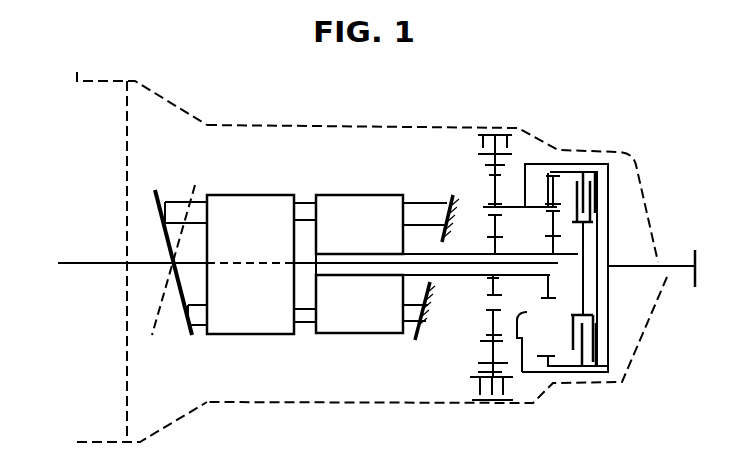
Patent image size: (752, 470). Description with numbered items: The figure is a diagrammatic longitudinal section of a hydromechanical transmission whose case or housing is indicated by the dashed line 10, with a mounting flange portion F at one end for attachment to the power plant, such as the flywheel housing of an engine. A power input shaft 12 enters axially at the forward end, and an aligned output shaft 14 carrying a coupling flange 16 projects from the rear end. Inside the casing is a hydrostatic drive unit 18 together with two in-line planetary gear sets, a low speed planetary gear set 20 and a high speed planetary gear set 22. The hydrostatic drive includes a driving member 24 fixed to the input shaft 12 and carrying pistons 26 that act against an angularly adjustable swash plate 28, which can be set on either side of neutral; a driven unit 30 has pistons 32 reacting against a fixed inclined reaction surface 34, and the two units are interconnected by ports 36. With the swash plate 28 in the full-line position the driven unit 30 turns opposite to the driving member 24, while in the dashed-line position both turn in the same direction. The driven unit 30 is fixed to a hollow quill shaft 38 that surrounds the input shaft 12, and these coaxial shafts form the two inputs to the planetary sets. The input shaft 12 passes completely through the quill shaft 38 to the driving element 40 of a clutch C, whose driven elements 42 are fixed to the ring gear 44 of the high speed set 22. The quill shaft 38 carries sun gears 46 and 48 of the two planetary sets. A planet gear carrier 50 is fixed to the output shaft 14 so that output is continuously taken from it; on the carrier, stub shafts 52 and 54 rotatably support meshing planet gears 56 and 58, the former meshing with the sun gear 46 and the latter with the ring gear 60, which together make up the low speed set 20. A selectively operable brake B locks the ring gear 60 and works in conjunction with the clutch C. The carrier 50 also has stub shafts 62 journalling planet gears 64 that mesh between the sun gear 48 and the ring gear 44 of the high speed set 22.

The dashed line 10 is at (365, 127).
The power input shaft 12 is at (68, 263).
The output shaft 14 is at (675, 267).
The coupling flange 16 is at (697, 278).
The hydrostatic drive unit 18 is at (381, 257).
The low speed planetary gear set 20 is at (480, 362).
The high speed planetary gear set 22 is at (580, 165).
The driving member 24 is at (223, 195).
The pistons 26 is at (172, 197).
The swash plate 28 is at (153, 200).
The driven unit 30 is at (350, 208).
The pistons 32 is at (422, 203).
The reaction surface 34 is at (430, 284).
The ports 36 is at (307, 202).
The quill shaft 38 is at (447, 276).
The driving element 40 is at (586, 234).
The driven elements 42 is at (590, 343).
The ring gear 44 is at (568, 372).
The sun gear 46 is at (490, 247).
The sun gear 48 is at (548, 249).
The planet gear carrier 50 is at (535, 165).
The stub shaft 52 is at (511, 206).
The stub shaft 54 is at (562, 323).
The planet gear 56 is at (490, 192).
The planet gear 58 is at (488, 316).
The ring gear 60 is at (498, 366).
The stub shafts 62 is at (528, 203).
The planet gears 64 is at (554, 218).
The brake B is at (473, 140).
The clutch C is at (614, 186).
The mounting flange portion F is at (82, 70).